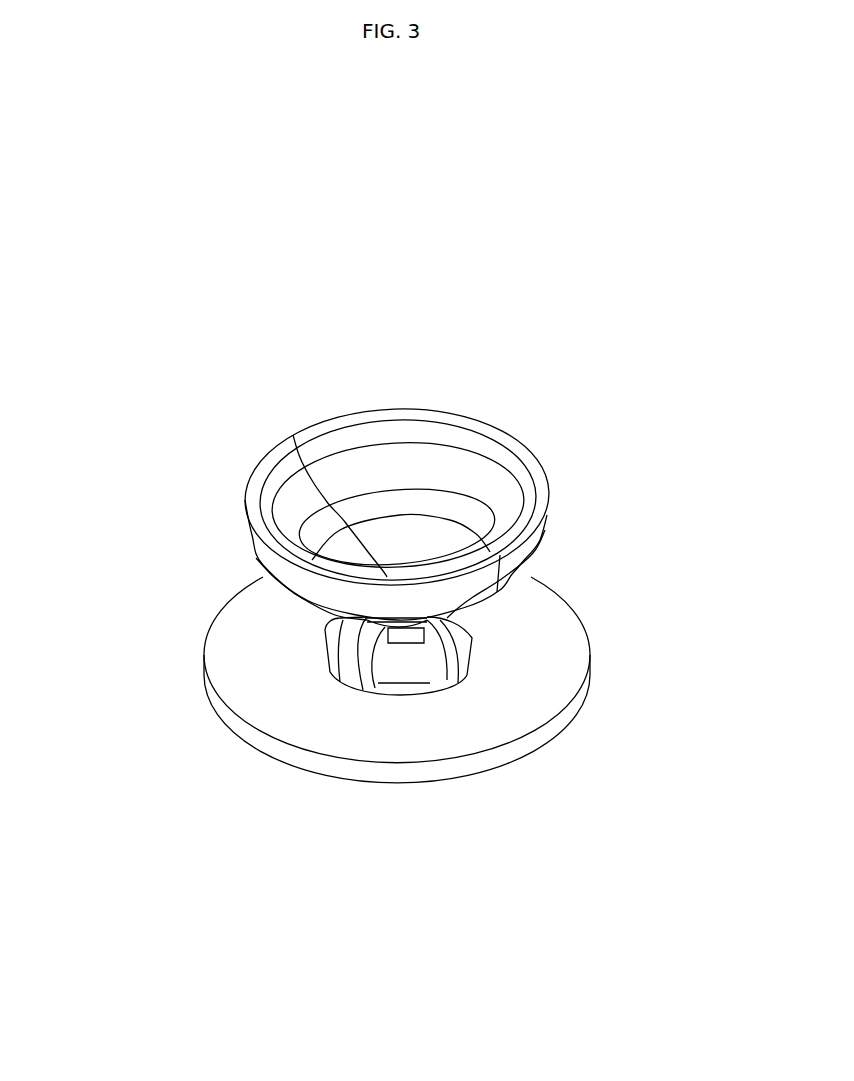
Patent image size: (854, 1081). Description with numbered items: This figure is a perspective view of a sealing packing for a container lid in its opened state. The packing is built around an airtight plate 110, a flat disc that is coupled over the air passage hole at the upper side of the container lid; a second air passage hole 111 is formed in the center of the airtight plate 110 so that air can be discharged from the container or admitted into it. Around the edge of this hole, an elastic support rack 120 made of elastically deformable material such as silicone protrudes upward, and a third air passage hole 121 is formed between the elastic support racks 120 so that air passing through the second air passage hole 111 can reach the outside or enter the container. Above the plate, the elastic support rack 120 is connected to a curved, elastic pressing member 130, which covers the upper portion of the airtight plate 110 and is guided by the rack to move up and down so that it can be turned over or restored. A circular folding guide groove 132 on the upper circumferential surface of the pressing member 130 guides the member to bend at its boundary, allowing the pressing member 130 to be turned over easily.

The airtight plate 110 is at (457, 637).
The second air passage hole 111 is at (397, 685).
The elastic support rack 120 is at (352, 662).
The third air passage hole 121 is at (408, 665).
The pressing member 130 is at (462, 452).
The folding guide groove 132 is at (470, 523).